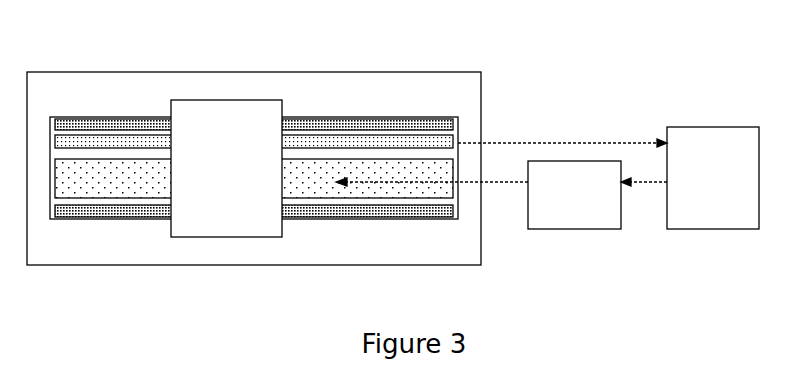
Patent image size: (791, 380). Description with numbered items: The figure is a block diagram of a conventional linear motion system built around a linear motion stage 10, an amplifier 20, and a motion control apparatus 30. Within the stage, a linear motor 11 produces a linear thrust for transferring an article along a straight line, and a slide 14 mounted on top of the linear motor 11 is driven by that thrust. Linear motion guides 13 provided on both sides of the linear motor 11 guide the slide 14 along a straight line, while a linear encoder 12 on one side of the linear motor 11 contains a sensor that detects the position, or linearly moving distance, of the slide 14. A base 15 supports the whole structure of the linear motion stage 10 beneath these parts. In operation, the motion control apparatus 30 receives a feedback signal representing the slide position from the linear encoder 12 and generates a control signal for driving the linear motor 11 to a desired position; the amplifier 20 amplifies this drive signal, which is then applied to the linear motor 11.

The linear motion stage 10 is at (387, 72).
The linear motor 11 is at (302, 173).
The linear encoder 12 is at (133, 140).
The linear motion guide 13 is at (78, 210).
The slide 14 is at (225, 100).
The base 15 is at (462, 118).
The amplifier 20 is at (572, 229).
The motion control apparatus 30 is at (710, 127).